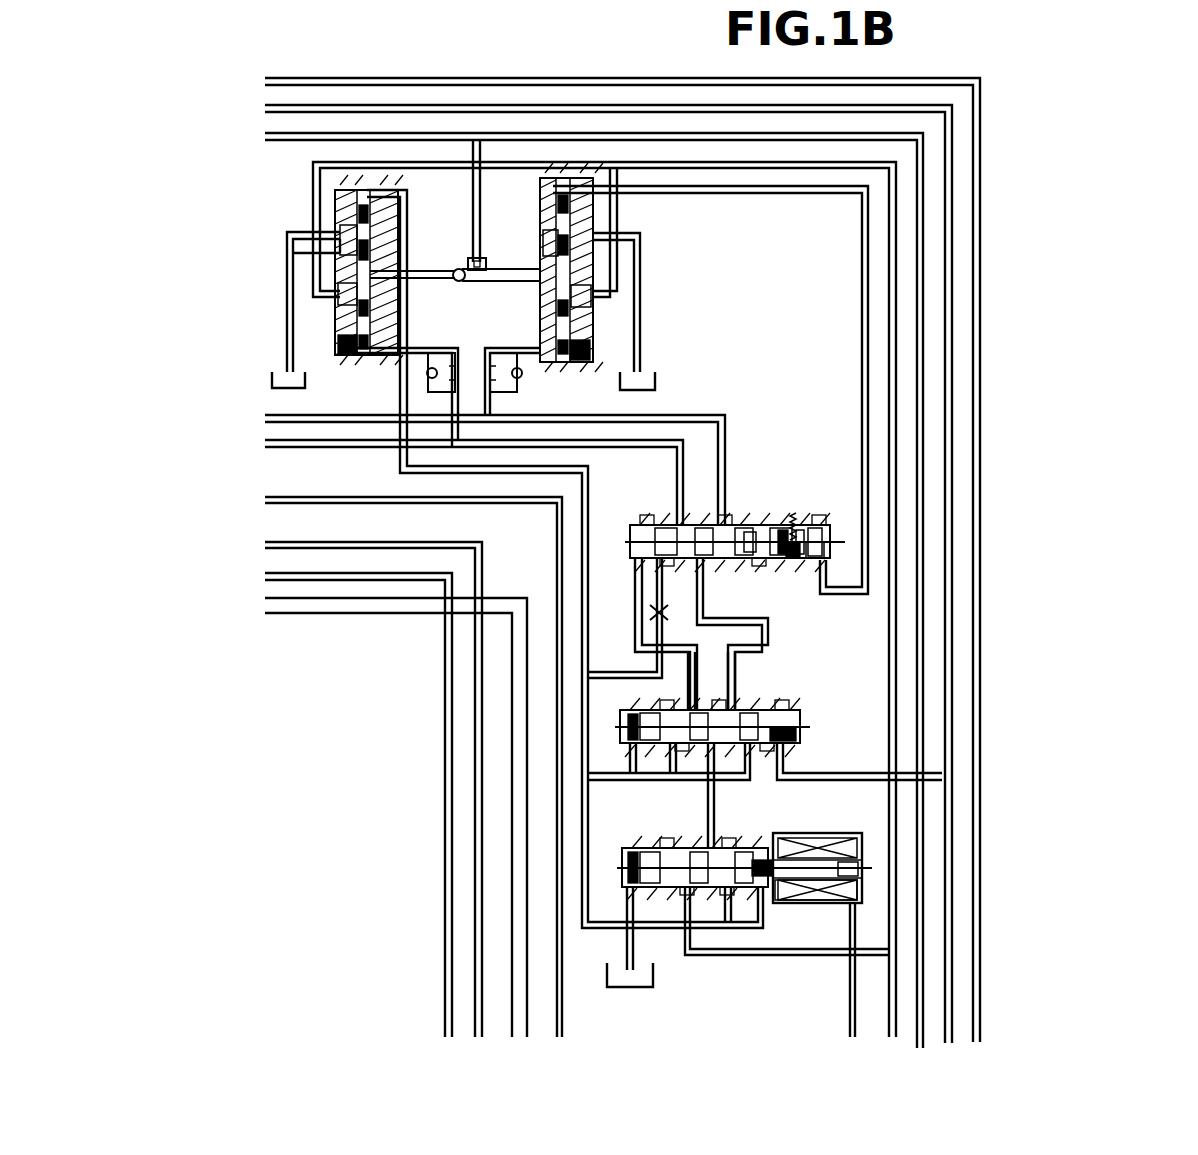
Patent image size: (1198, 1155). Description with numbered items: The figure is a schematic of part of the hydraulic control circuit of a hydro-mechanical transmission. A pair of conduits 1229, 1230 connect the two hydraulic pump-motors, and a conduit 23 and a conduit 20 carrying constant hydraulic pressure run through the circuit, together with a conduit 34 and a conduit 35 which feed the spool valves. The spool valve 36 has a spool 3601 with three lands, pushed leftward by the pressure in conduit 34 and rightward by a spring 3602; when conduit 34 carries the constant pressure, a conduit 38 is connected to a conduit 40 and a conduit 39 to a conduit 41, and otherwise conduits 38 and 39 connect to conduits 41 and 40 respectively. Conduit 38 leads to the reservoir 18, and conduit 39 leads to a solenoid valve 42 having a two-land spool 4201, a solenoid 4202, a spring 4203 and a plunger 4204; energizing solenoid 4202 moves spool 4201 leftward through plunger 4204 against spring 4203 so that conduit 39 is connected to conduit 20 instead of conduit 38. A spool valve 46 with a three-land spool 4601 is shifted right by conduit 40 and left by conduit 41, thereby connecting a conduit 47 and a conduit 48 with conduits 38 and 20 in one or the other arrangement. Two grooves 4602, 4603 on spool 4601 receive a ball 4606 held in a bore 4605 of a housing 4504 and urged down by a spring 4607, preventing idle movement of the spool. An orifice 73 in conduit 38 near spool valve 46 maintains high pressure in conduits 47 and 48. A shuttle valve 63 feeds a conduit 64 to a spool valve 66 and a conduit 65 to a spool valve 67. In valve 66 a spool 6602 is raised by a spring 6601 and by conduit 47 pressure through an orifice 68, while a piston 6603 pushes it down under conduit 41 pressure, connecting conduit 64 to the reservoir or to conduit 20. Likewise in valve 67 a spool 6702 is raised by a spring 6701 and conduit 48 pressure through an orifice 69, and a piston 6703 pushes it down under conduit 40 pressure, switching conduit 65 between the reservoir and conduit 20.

The reservoir 18 is at (630, 987).
The conduit 20 is at (889, 690).
The conduit 23 is at (557, 570).
The conduit 34 is at (519, 105).
The conduit 35 is at (468, 78).
The spool valve 36 is at (786, 708).
The conduit 38 is at (615, 780).
The conduit 39 is at (708, 805).
The conduit 40 is at (695, 662).
The conduit 41 is at (735, 692).
The solenoid valve 42 is at (812, 833).
The spool valve 46 is at (645, 520).
The conduit 47 is at (682, 415).
The conduit 48 is at (678, 468).
The shuttle valve 63 is at (490, 262).
The conduit 64 is at (525, 275).
The conduit 65 is at (437, 271).
The spool valve 66 is at (622, 230).
The spool valve 67 is at (398, 243).
The orifice 68 is at (489, 356).
The orifice 69 is at (457, 356).
The orifice 73 is at (652, 612).
The conduit 1229 is at (330, 573).
The conduit 1230 is at (330, 542).
The spool 3601 is at (782, 742).
The spring 3602 is at (656, 716).
The spool 4201 is at (742, 882).
The solenoid 4202 is at (846, 897).
The spring 4203 is at (650, 850).
The plunger 4204 is at (778, 903).
The spring 4504 is at (846, 502).
The spool 4601 is at (760, 515).
The groove 4602 is at (795, 560).
The groove 4603 is at (815, 560).
The bore 4605 is at (788, 528).
The ball 4606 is at (802, 530).
The spring 4607 is at (795, 520).
The spring 6601 is at (572, 362).
The spool 6602 is at (588, 300).
The piston 6603 is at (560, 240).
The spring 6701 is at (352, 356).
The spool 6702 is at (348, 306).
The piston 6703 is at (345, 235).